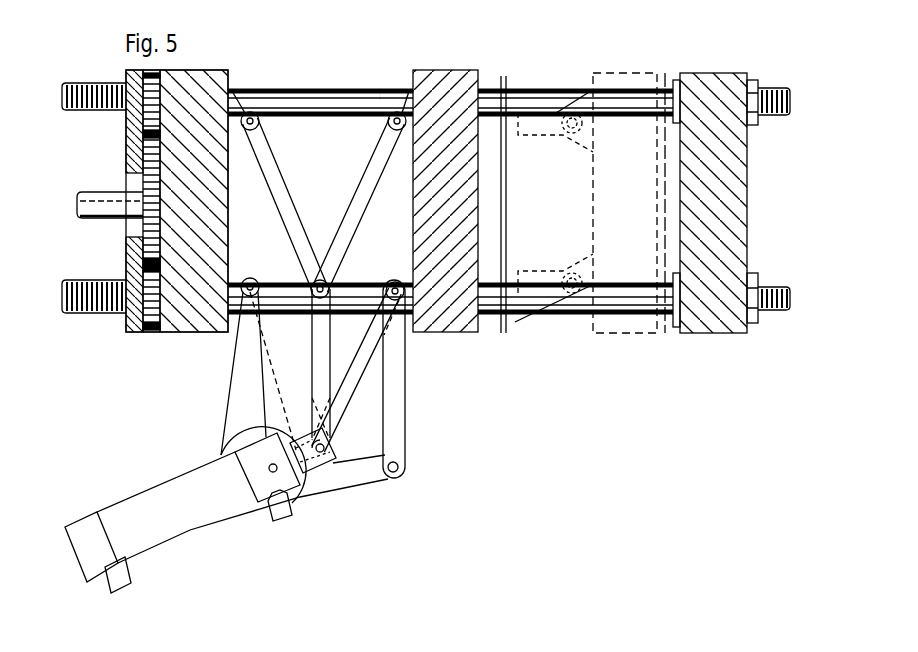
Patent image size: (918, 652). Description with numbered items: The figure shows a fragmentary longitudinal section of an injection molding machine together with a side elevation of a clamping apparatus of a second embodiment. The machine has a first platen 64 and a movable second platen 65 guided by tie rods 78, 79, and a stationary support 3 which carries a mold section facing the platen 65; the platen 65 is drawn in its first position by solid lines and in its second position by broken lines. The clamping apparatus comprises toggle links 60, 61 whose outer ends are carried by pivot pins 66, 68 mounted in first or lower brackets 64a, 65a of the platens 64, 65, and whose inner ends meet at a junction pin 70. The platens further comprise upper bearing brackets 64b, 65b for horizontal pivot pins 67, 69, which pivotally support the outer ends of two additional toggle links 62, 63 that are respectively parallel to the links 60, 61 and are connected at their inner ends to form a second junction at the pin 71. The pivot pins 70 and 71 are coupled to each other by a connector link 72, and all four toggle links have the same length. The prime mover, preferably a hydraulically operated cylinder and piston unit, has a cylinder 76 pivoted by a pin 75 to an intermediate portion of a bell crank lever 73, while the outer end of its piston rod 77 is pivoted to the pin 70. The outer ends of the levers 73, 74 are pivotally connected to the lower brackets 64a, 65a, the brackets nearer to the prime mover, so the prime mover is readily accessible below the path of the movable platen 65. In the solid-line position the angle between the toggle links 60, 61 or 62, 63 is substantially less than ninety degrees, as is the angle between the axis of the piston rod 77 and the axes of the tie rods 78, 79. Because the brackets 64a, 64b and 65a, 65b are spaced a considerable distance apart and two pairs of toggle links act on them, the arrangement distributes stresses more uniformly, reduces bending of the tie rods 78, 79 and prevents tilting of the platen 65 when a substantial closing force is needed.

The stationary support 3 is at (745, 195).
The toggle link 60 is at (278, 348).
The toggle link 61 is at (395, 350).
The toggle link 62 is at (283, 182).
The toggle link 63 is at (368, 187).
The first platen 64 is at (178, 322).
The lower bracket 64a is at (245, 265).
The upper bearing bracket 64b is at (238, 96).
The second platen 65 is at (458, 92).
The lower bracket 65a is at (400, 272).
The upper bearing bracket 65b is at (400, 88).
The pivot pin 66 is at (255, 280).
The horizontal pivot pin 67 is at (250, 131).
The pivot pin 68 is at (365, 352).
The horizontal pivot pin 69 is at (387, 97).
The pin 70 is at (321, 458).
The pin 71 is at (331, 287).
The connector link 72 is at (322, 372).
The bell crank lever 73 is at (305, 493).
The lever 74 is at (392, 441).
The pin 75 is at (272, 480).
The cylinder 76 is at (203, 507).
The piston rod 77 is at (280, 435).
The tie rod 78 is at (505, 320).
The tie rod 79 is at (517, 92).